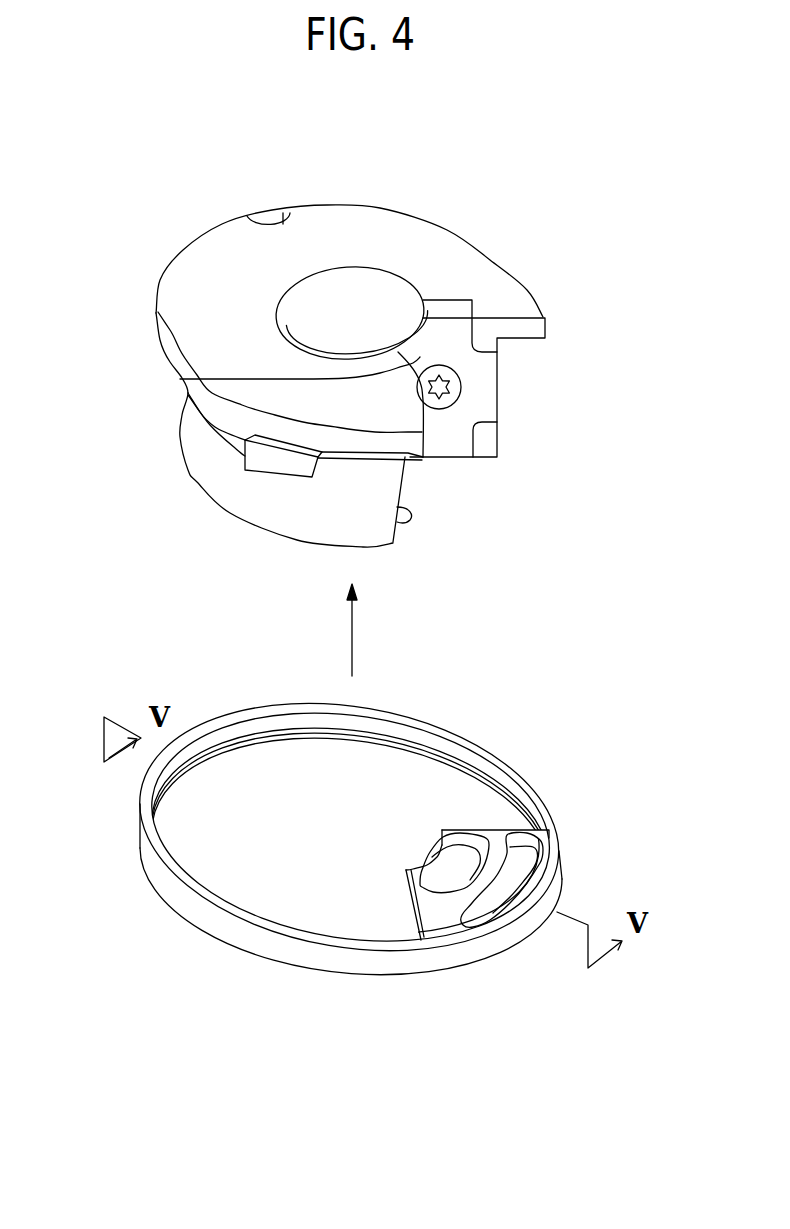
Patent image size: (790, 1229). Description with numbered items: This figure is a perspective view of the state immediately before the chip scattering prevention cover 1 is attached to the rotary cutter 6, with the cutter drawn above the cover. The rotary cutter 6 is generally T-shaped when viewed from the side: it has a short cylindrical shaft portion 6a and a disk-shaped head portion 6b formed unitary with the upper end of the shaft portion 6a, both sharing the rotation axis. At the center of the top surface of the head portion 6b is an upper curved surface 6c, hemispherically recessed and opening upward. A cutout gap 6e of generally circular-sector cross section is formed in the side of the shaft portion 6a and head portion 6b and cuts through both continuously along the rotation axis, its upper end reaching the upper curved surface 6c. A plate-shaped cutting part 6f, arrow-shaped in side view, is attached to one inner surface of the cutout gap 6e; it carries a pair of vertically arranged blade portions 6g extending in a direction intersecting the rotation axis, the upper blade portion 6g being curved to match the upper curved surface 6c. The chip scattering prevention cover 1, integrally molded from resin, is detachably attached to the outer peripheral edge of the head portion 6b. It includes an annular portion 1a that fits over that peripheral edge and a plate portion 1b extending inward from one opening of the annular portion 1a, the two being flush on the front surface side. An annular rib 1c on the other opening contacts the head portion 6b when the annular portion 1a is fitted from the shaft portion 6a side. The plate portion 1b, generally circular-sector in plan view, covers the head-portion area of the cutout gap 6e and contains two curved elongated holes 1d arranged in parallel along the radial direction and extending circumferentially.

The rotary cutter 6 is at (517, 202).
The shaft portion 6a is at (257, 527).
The head portion 6b is at (217, 232).
The upper curved surface 6c is at (333, 313).
The cutout gap 6e is at (410, 513).
The cutting part 6f is at (447, 297).
The blade portions 6g is at (180, 379).
The chip scattering prevention cover 1 is at (517, 722).
The annular portion 1a is at (234, 952).
The plate portion 1b is at (512, 829).
The annular rib 1c is at (263, 747).
The elongated holes 1d is at (472, 913).